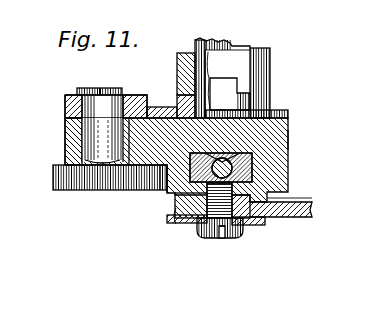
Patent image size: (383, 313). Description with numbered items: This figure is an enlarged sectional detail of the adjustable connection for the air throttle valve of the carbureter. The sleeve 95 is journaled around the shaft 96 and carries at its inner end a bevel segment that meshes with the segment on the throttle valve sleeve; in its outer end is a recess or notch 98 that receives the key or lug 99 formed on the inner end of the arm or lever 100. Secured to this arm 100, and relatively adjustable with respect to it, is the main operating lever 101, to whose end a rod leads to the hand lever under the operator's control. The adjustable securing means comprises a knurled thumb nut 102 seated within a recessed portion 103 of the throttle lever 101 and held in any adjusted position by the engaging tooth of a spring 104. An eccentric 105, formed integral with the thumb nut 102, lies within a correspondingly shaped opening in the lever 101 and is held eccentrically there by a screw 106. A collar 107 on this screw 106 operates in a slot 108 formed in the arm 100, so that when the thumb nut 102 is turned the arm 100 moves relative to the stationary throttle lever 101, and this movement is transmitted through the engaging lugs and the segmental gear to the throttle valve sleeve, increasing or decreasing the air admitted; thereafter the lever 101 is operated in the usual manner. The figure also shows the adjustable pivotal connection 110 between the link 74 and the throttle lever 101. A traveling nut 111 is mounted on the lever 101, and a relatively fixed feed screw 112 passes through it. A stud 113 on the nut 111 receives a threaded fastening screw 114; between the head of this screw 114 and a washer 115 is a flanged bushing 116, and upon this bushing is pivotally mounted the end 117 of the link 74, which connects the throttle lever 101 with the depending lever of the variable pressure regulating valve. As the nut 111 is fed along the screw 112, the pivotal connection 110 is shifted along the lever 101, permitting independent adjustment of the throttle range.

The link 74 is at (295, 218).
The sleeve 95 is at (185, 50).
The shaft 96 is at (218, 38).
The recess or notch 98 is at (237, 82).
The key or lug 99 is at (228, 78).
The arm or lever 100 is at (170, 108).
The main operating lever 101 is at (290, 150).
The knurled thumb nut 102 is at (53, 190).
The recessed portion 103 is at (167, 195).
The spring 104 is at (160, 190).
The eccentric 105 is at (82, 155).
The screw 106 is at (90, 92).
The collar 107 is at (100, 105).
The slot 108 is at (118, 102).
The adjustable pivotal connection 110 is at (202, 237).
The traveling nut 111 is at (252, 173).
The feed screw 112 is at (257, 155).
The stud 113 is at (240, 225).
The fastening screw 114 is at (198, 245).
The washer 115 is at (257, 222).
The flanged bushing 116 is at (273, 198).
The end of link 117 is at (203, 232).